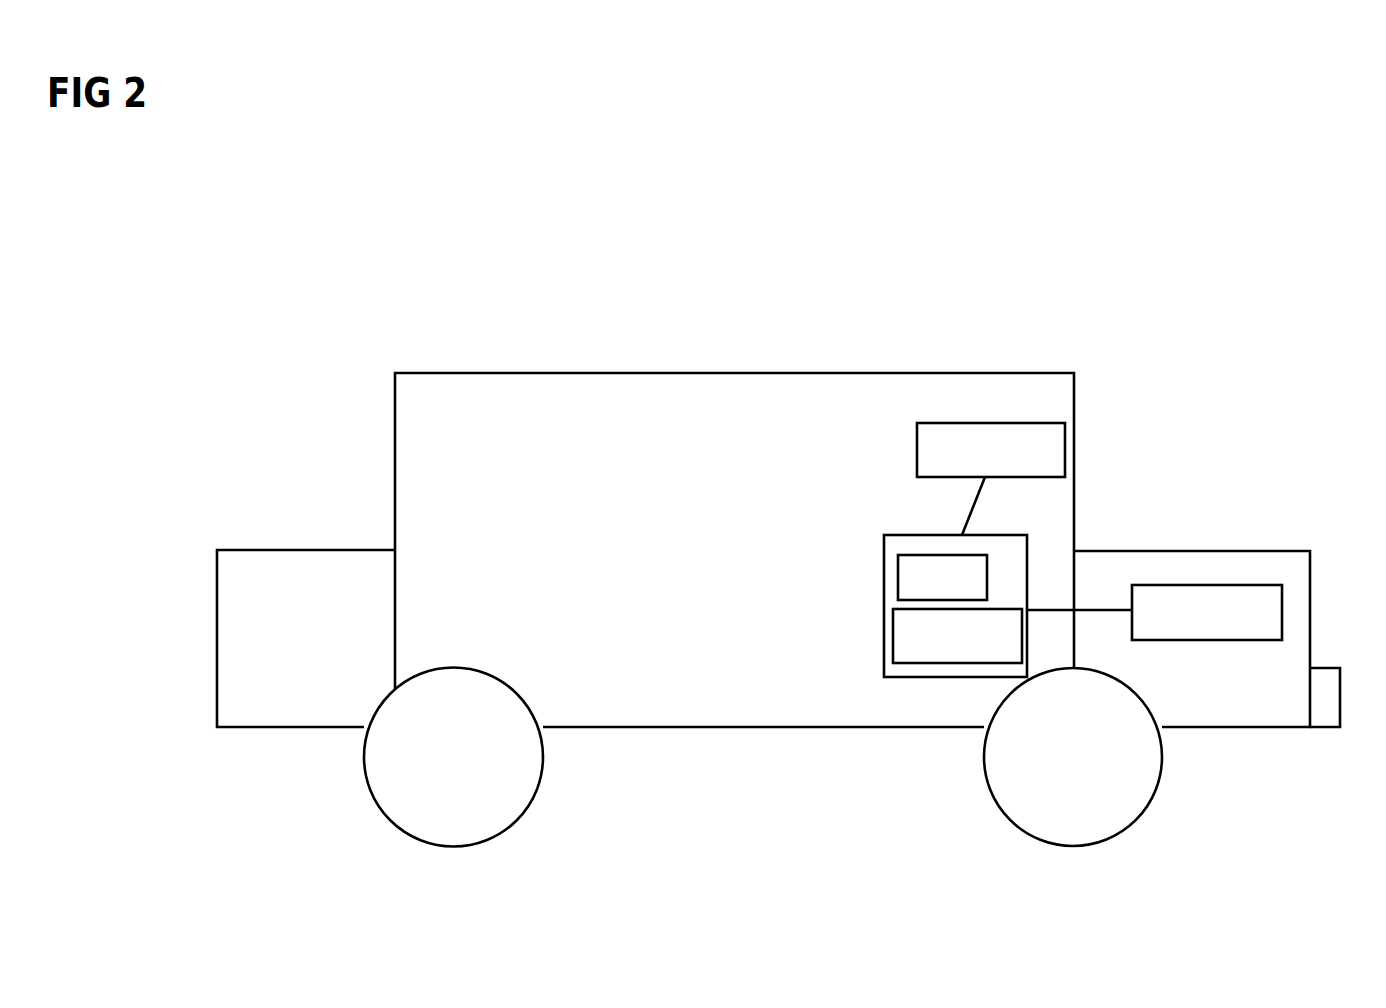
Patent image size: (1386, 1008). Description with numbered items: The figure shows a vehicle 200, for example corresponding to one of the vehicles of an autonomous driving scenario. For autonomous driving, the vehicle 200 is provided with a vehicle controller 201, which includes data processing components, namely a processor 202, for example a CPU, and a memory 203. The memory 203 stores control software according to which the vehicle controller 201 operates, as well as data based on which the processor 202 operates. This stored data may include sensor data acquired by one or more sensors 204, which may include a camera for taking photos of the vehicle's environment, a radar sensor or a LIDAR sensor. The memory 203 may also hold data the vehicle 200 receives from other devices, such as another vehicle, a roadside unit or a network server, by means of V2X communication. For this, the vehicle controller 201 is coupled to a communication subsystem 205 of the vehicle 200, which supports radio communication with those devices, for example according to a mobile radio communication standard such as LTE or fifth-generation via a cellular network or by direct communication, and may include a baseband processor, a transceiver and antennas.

The vehicle 200 is at (720, 373).
The vehicle controller 201 is at (913, 535).
The processor 202 is at (898, 580).
The memory 203 is at (893, 635).
The sensors 204 is at (1272, 585).
The communication subsystem 205 is at (1055, 423).